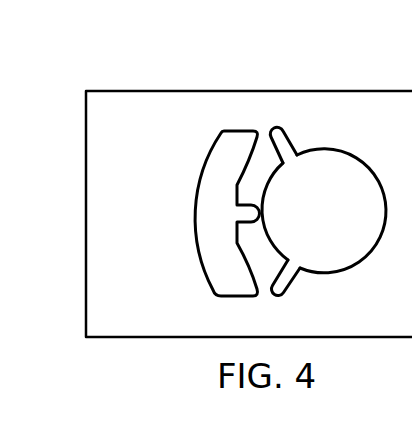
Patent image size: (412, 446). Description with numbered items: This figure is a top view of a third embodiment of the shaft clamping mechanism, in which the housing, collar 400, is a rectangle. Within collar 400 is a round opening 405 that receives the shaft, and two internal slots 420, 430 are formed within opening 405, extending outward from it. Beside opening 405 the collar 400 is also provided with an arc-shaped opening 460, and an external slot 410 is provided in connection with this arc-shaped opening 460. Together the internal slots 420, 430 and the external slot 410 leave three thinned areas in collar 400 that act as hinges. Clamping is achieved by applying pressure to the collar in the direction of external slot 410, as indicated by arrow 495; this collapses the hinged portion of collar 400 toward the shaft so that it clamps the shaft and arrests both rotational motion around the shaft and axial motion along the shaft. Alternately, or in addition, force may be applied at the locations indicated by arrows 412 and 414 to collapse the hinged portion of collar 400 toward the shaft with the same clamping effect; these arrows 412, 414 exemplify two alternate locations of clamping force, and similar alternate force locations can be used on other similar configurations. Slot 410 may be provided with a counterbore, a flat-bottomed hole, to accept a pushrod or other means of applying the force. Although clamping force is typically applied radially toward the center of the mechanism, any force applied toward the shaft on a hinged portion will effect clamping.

The collar 400 is at (153, 91).
The opening 460 is at (205, 266).
The arrow 414 is at (222, 174).
The arrow 412 is at (231, 246).
The arrow 495 is at (229, 213).
The external slot 410 is at (255, 213).
The internal slot 430 is at (278, 133).
The internal slot 420 is at (282, 292).
The opening 405 is at (350, 168).